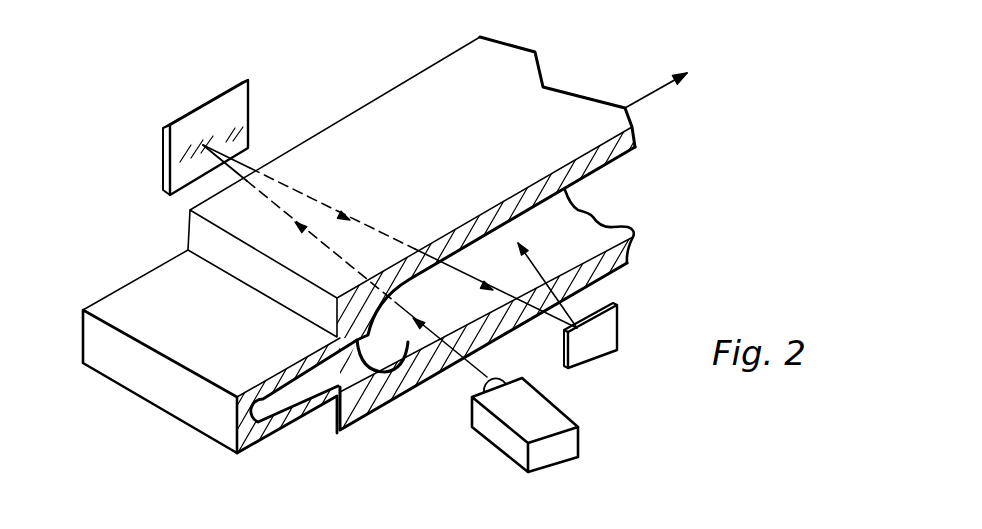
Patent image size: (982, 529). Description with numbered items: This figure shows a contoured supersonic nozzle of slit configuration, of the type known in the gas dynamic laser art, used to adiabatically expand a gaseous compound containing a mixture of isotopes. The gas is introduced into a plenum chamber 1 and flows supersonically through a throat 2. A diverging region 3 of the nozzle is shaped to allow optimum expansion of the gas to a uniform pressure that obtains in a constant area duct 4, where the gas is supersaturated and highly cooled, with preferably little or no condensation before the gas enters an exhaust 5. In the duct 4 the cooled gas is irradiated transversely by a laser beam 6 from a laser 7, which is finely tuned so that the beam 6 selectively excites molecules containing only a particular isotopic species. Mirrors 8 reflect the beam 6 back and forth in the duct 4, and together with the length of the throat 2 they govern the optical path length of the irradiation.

The plenum chamber 1 is at (270, 413).
The throat 2 is at (365, 367).
The diverging region 3 is at (402, 360).
The constant area duct 4 is at (580, 227).
The exhaust 5 is at (657, 95).
The laser beam 6 is at (558, 331).
The laser 7 is at (555, 458).
The mirrors 8 is at (636, 304).